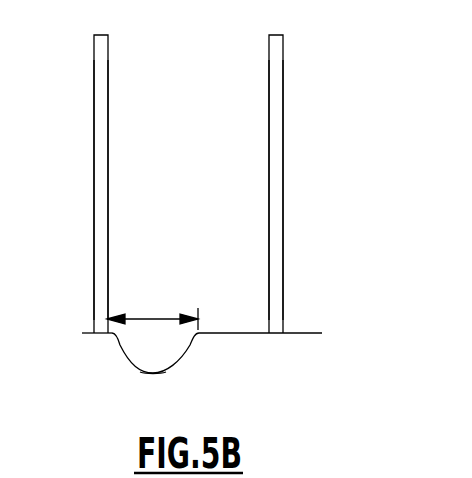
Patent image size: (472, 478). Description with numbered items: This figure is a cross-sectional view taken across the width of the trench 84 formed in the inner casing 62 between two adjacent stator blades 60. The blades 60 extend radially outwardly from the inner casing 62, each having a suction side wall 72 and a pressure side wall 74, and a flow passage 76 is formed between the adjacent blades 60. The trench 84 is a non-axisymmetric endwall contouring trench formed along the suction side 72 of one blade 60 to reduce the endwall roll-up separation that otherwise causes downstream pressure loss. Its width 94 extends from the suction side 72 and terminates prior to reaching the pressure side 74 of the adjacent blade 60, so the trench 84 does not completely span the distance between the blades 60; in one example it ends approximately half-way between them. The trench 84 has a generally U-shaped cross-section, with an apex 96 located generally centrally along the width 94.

The stator blade 60 is at (108, 103).
The inner casing 62 is at (229, 333).
The suction side wall 72 is at (108, 188).
The pressure side wall 74 is at (94, 200).
The flow passage 76 is at (198, 131).
The trench 84 is at (173, 353).
The width 94 is at (147, 318).
The apex 96 is at (153, 375).